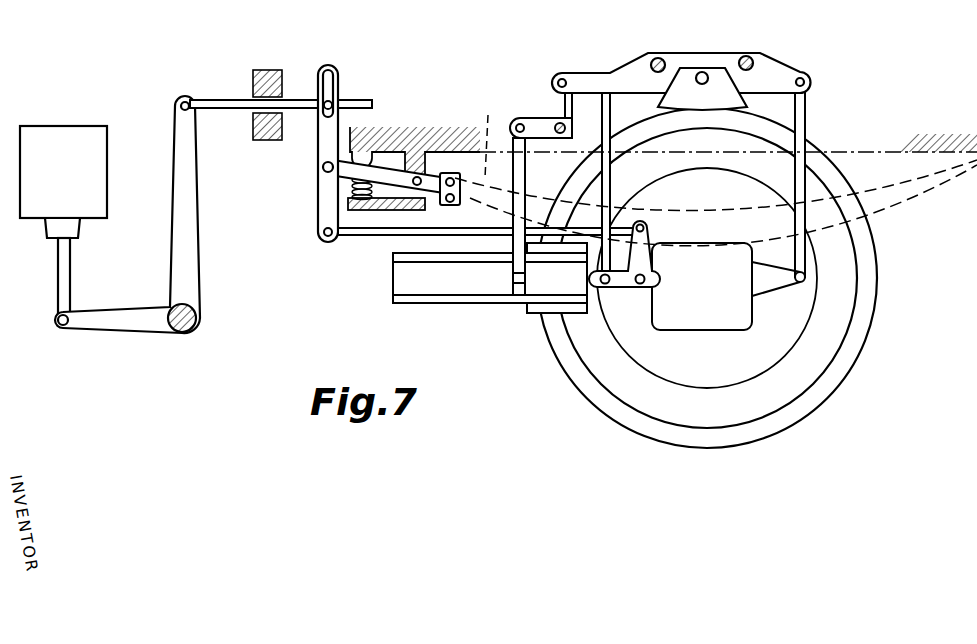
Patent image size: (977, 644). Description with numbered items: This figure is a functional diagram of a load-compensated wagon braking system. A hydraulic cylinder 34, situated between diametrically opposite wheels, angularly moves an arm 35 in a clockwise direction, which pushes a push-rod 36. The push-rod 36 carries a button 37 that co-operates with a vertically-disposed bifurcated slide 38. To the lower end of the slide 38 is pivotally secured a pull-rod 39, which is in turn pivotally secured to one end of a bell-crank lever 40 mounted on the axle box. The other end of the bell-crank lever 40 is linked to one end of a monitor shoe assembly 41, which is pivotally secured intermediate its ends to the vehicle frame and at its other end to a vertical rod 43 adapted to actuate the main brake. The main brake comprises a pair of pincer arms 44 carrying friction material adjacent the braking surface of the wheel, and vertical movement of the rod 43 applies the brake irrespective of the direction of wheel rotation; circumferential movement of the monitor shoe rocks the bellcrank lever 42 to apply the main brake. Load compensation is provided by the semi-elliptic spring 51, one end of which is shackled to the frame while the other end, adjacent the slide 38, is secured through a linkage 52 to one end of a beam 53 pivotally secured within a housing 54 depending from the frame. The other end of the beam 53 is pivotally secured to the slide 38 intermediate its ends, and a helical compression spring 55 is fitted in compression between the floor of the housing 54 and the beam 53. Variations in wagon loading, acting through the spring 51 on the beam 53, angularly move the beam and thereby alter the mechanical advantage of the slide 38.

The hydraulic cylinder 34 is at (63, 220).
The arm 35 is at (185, 215).
The push-rod 36 is at (222, 100).
The button 37 is at (331, 102).
The bifurcated slide 38 is at (325, 135).
The pull-rod 39 is at (344, 236).
The bell-crank lever 40 is at (618, 288).
The monitor shoe assembly 41 is at (718, 42).
The bellcrank lever 42 is at (560, 102).
The vertical rod 43 is at (523, 163).
The pincer arms 44 is at (472, 283).
The semi-elliptic spring 51 is at (474, 137).
The linkage 52 is at (462, 204).
The beam 53 is at (385, 182).
The housing 54 is at (408, 210).
The helical compression spring 55 is at (352, 197).